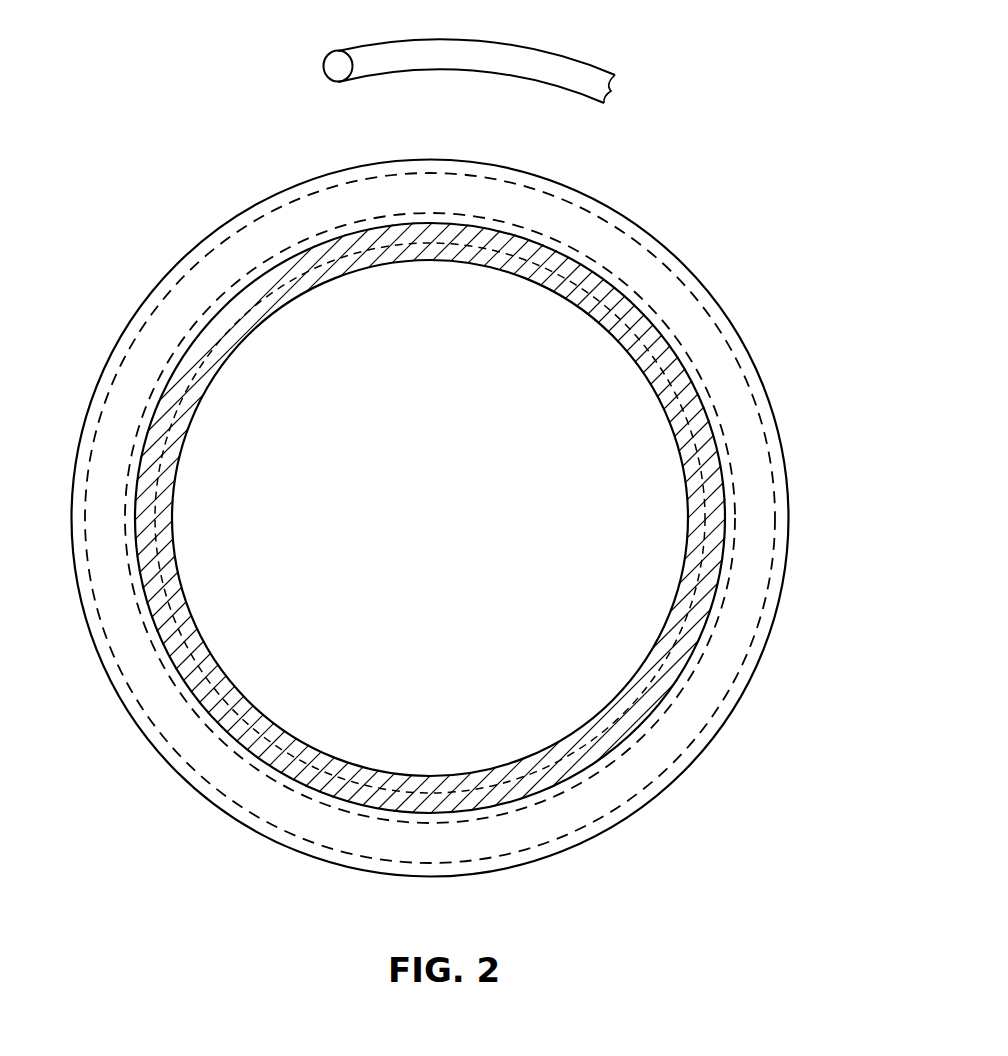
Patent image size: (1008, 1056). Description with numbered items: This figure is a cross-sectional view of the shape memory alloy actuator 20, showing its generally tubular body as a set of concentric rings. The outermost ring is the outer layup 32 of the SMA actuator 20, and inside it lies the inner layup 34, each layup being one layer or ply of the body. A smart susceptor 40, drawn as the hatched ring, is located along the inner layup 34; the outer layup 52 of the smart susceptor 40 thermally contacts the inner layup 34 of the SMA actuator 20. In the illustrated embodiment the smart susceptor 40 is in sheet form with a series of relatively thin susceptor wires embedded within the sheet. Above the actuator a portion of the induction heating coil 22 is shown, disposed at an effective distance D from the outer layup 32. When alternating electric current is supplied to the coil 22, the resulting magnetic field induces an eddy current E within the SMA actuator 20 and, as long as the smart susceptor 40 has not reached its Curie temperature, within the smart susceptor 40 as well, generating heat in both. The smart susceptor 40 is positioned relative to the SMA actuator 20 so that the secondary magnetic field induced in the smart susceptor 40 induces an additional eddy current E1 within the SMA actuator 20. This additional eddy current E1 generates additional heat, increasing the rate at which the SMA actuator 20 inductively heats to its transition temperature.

The coil 22 is at (430, 39).
The effective distance D is at (430, 70).
The SMA actuator 20 is at (722, 307).
The outer layup 32 is at (775, 417).
The outer layup of the smart susceptor 52 is at (688, 375).
The inner layup 34 is at (723, 505).
The smart susceptor 40 is at (608, 715).
The additional eddy current E1 is at (590, 258).
The eddy current E is at (663, 668).